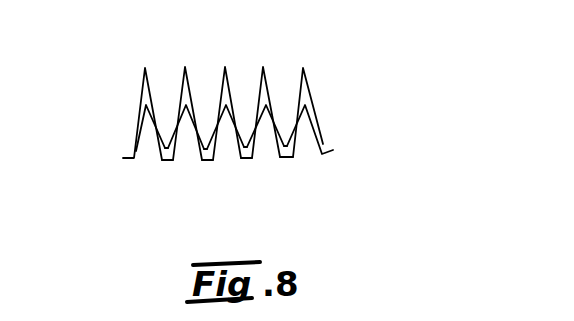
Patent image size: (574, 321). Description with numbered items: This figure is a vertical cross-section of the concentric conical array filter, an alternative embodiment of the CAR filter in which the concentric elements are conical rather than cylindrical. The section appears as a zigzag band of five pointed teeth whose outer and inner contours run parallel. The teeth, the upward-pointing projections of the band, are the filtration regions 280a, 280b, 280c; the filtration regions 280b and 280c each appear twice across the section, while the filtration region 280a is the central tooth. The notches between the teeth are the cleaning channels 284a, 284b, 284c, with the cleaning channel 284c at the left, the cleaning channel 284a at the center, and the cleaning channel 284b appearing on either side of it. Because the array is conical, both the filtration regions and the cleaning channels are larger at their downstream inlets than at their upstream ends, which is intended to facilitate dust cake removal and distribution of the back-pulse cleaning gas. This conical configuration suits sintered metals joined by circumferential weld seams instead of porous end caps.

The filtration region 280a is at (226, 133).
The filtration region 280b is at (190, 143).
The filtration region 280c is at (147, 143).
The cleaning channel 284a is at (245, 90).
The cleaning channel 284b is at (208, 87).
The cleaning channel 284c is at (163, 92).